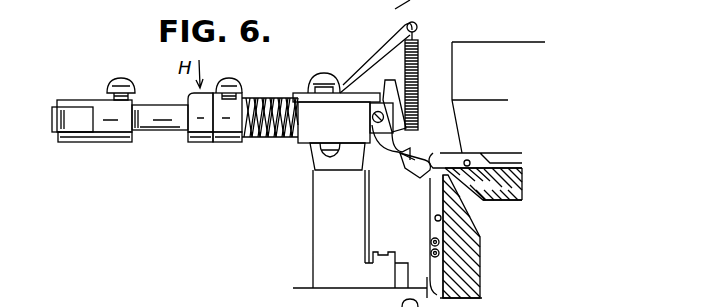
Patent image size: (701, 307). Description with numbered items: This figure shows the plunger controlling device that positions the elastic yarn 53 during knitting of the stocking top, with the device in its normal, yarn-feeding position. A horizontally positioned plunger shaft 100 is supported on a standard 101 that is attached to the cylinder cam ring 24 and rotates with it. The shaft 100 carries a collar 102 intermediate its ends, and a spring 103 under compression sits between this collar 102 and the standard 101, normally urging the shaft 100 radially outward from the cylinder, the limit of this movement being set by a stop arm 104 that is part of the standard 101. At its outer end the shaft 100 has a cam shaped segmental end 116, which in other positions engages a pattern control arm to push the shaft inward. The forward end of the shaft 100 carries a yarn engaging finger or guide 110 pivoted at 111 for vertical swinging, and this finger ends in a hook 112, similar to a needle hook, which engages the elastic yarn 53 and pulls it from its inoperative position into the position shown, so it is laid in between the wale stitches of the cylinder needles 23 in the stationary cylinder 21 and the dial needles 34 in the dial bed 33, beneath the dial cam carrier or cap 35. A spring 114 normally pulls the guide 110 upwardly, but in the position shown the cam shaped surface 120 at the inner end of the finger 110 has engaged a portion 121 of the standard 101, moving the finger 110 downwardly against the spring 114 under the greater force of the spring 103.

The cam shaped segmental end 116 is at (75, 122).
The plunger shaft 100 is at (165, 130).
The stop arm 104 is at (203, 132).
The collar 102 is at (231, 132).
The spring 103 is at (283, 63).
The pivot 111 is at (370, 118).
The portion of the standard 121 is at (373, 68).
The spring 114 is at (420, 43).
The cam shaped surface 120 is at (383, 83).
The yarn engaging finger or guide 110 is at (377, 142).
The elastic yarn 53 is at (420, 173).
The hook 112 is at (420, 180).
The dial cam carrier or cap 35 is at (515, 47).
The dial needles 34 is at (502, 162).
The dial bed 33 is at (512, 197).
The stationary cylinder 21 is at (465, 262).
The needles 23 is at (438, 290).
The standard 101 is at (320, 207).
The cylinder cam ring 24 is at (303, 288).